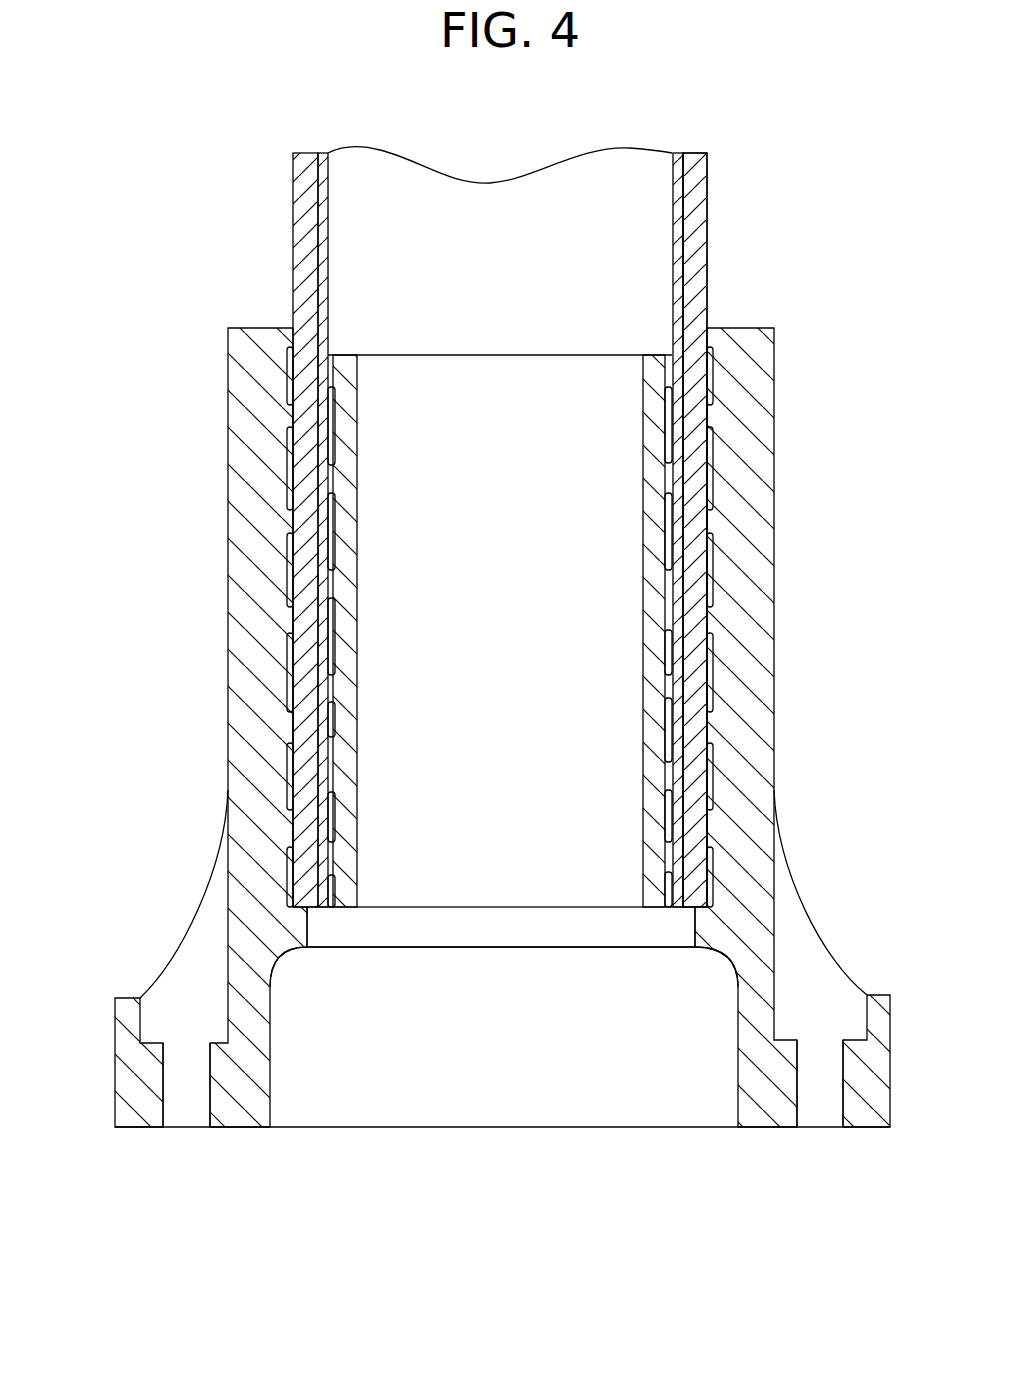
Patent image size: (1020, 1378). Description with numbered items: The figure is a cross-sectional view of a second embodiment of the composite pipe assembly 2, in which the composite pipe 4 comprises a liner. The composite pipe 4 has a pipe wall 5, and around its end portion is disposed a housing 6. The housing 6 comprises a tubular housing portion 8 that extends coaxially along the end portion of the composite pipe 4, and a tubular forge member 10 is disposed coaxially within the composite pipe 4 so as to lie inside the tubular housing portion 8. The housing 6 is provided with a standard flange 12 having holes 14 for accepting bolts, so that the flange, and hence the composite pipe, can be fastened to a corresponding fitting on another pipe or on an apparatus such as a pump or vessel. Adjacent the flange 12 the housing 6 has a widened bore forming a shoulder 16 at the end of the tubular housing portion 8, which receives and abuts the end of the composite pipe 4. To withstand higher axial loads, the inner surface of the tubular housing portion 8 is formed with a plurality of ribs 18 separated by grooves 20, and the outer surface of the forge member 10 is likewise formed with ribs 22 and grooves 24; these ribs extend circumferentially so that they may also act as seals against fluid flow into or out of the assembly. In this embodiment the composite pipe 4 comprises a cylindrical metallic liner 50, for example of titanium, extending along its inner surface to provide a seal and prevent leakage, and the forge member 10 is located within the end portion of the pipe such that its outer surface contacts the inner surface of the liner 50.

The composite pipe assembly 2 is at (796, 183).
The composite pipe 4 is at (295, 208).
The pipe wall 5 is at (695, 480).
The housing 6 is at (122, 667).
The tubular housing portion 8 is at (758, 527).
The tubular forge member 10 is at (657, 458).
The flange 12 is at (117, 998).
The holes 14 is at (163, 1084).
The shoulder 16 is at (720, 918).
The ribs 18 is at (291, 626).
The grooves 20 is at (292, 446).
The ribs 22 is at (335, 570).
The grooves 24 is at (333, 680).
The cylindrical metallic liner 50 is at (678, 310).